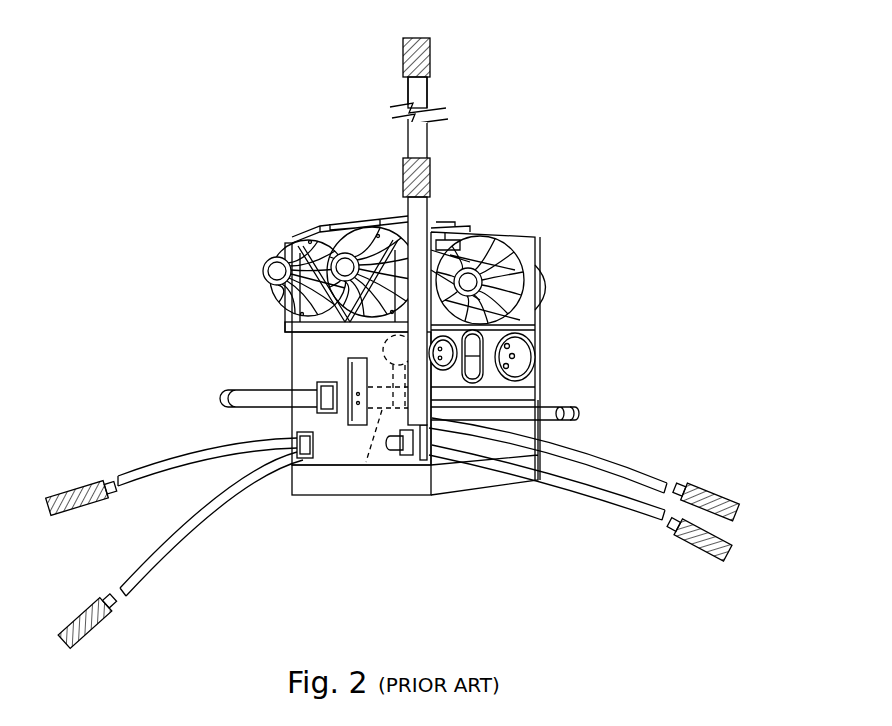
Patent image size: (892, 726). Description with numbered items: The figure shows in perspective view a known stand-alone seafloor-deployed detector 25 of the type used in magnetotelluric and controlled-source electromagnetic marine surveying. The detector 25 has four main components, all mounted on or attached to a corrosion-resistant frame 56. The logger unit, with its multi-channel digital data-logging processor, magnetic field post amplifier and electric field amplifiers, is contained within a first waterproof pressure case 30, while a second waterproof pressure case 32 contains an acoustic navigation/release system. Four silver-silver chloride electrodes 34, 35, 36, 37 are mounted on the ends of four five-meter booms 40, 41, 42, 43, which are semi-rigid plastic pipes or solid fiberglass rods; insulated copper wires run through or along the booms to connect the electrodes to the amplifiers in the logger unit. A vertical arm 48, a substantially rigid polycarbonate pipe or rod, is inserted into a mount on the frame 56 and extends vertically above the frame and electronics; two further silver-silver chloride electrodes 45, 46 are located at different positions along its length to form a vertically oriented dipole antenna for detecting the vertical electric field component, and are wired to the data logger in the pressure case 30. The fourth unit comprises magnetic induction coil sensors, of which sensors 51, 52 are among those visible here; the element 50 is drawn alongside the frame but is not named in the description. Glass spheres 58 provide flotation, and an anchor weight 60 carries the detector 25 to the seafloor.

The detector 25 is at (630, 256).
The first waterproof pressure case 30 is at (520, 356).
The second waterproof pressure case 32 is at (445, 372).
The silver-silver chloride electrode 34 is at (75, 490).
The silver-silver chloride electrode 35 is at (722, 492).
The silver-silver chloride electrode 36 is at (96, 636).
The silver-silver chloride electrode 37 is at (695, 556).
The boom 40 is at (180, 457).
The boom 41 is at (640, 462).
The boom 42 is at (178, 546).
The boom 43 is at (605, 490).
The silver-silver chloride electrode 45 is at (432, 178).
The silver-silver chloride electrode 46 is at (432, 56).
The vertical arm 48 is at (407, 145).
The handle rod 50 is at (228, 386).
The magnetic induction coil sensor 51 is at (582, 410).
The magnetic induction coil sensor 52 is at (570, 421).
The frame 56 is at (305, 352).
The glass spheres 58 is at (282, 260).
The anchor weight 60 is at (353, 482).